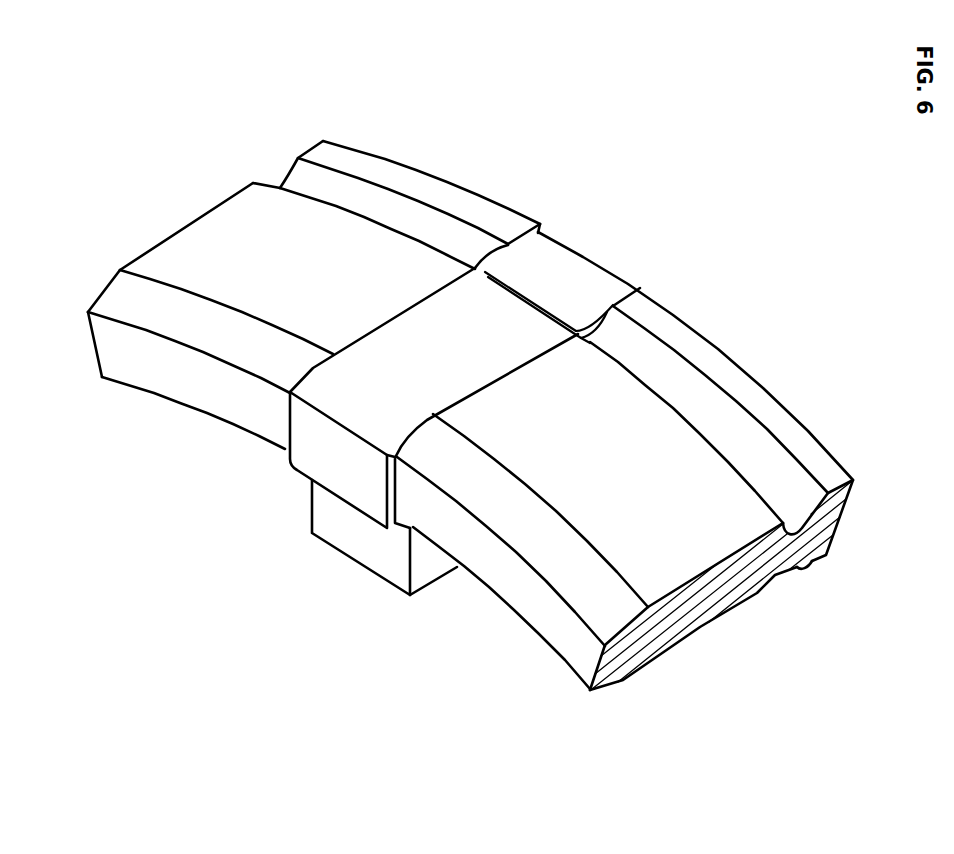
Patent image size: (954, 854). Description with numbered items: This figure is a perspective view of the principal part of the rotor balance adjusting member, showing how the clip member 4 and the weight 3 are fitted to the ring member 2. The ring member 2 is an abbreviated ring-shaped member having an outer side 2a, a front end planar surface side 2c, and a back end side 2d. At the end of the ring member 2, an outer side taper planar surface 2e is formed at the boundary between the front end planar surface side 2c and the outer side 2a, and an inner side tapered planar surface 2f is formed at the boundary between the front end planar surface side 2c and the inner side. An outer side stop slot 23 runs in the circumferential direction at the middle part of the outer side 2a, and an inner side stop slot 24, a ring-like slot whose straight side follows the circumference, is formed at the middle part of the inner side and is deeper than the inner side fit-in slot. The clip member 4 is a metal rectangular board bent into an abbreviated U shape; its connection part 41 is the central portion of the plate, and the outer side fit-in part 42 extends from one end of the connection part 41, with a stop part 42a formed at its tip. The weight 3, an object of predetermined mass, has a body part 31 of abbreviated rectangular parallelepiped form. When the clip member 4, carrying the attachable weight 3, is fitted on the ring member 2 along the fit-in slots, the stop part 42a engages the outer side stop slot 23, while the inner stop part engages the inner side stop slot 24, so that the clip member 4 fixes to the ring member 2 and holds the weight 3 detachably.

The ring member 2 is at (442, 145).
The outer side 2a is at (221, 218).
The front end planar surface side 2c is at (103, 348).
The back end side 2d is at (843, 516).
The outer side taper planar surface 2e is at (122, 300).
The inner side tapered planar surface 2f is at (604, 690).
The outer side stop slot 23 is at (294, 176).
The inner side stop slot 24 is at (777, 573).
The weight 3 is at (410, 619).
The body part 31 is at (353, 538).
The clip member 4 is at (266, 478).
The connection part 41 is at (308, 463).
The outer side fit-in part 42 is at (406, 327).
The stop part 42a is at (580, 330).